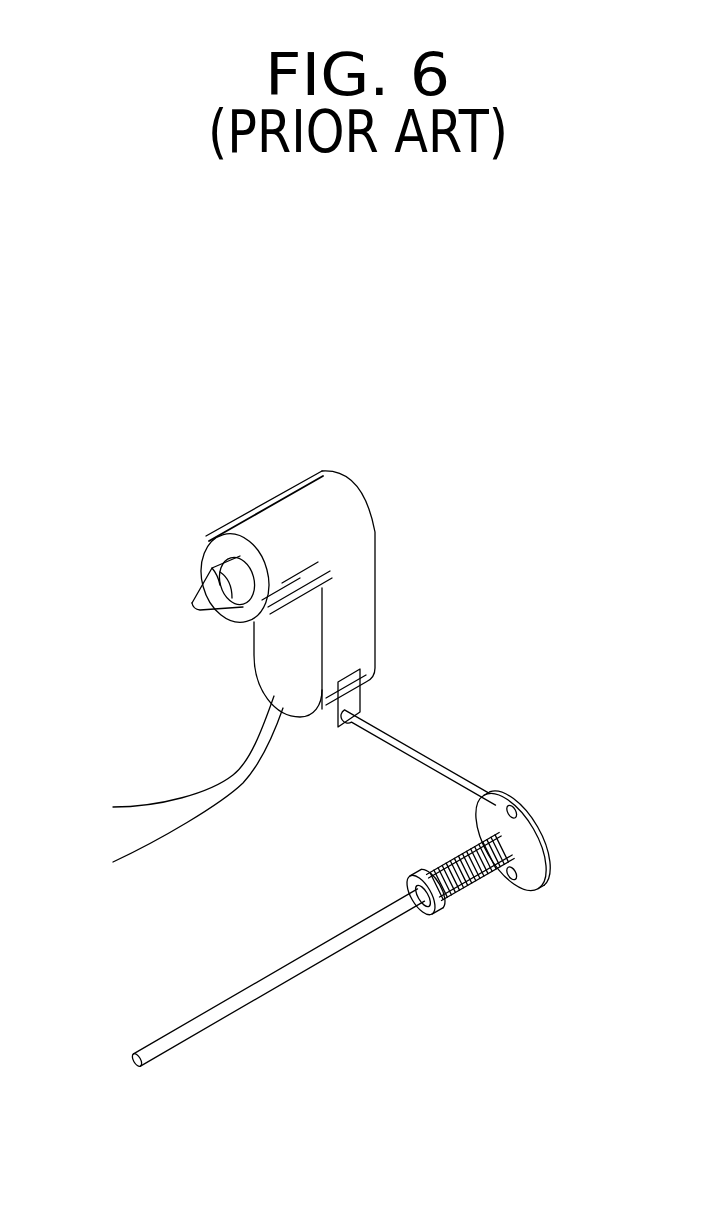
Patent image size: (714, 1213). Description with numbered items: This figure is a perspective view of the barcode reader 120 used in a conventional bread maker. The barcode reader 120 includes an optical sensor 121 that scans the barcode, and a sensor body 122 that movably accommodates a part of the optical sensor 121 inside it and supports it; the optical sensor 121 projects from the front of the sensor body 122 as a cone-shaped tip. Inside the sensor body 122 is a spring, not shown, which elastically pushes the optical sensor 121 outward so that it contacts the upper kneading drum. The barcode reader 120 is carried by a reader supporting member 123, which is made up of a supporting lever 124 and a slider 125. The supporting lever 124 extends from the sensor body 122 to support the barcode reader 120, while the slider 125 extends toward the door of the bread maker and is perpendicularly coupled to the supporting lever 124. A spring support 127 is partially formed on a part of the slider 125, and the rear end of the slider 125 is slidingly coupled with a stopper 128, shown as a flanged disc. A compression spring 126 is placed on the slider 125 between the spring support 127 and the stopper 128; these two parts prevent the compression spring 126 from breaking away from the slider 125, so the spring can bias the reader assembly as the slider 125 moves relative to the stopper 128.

The barcode reader 120 is at (113, 443).
The optical sensor 121 is at (198, 583).
The sensor body 122 is at (258, 500).
The reader supporting member 123 is at (290, 787).
The supporting lever 124 is at (383, 742).
The slider 125 is at (360, 926).
The compression spring 126 is at (482, 876).
The spring support 127 is at (440, 904).
The stopper 128 is at (530, 800).